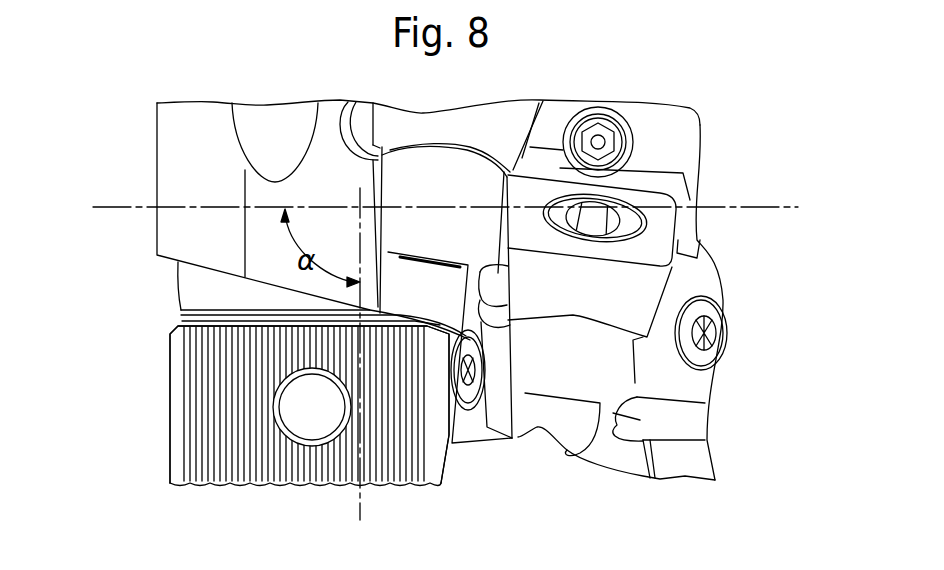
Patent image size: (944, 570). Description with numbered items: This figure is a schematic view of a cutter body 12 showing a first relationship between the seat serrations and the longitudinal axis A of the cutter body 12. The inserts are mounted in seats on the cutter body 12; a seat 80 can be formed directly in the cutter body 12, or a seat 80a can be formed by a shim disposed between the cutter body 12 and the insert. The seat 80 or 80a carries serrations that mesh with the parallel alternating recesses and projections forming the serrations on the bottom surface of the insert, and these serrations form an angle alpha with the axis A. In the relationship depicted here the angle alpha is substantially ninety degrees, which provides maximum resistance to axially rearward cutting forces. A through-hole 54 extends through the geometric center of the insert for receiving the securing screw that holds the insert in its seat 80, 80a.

The cutter body 12 is at (188, 165).
The seat 80 is at (195, 410).
The seat 80a is at (309, 404).
The through-hole 54 is at (305, 413).
The axis A is at (768, 206).